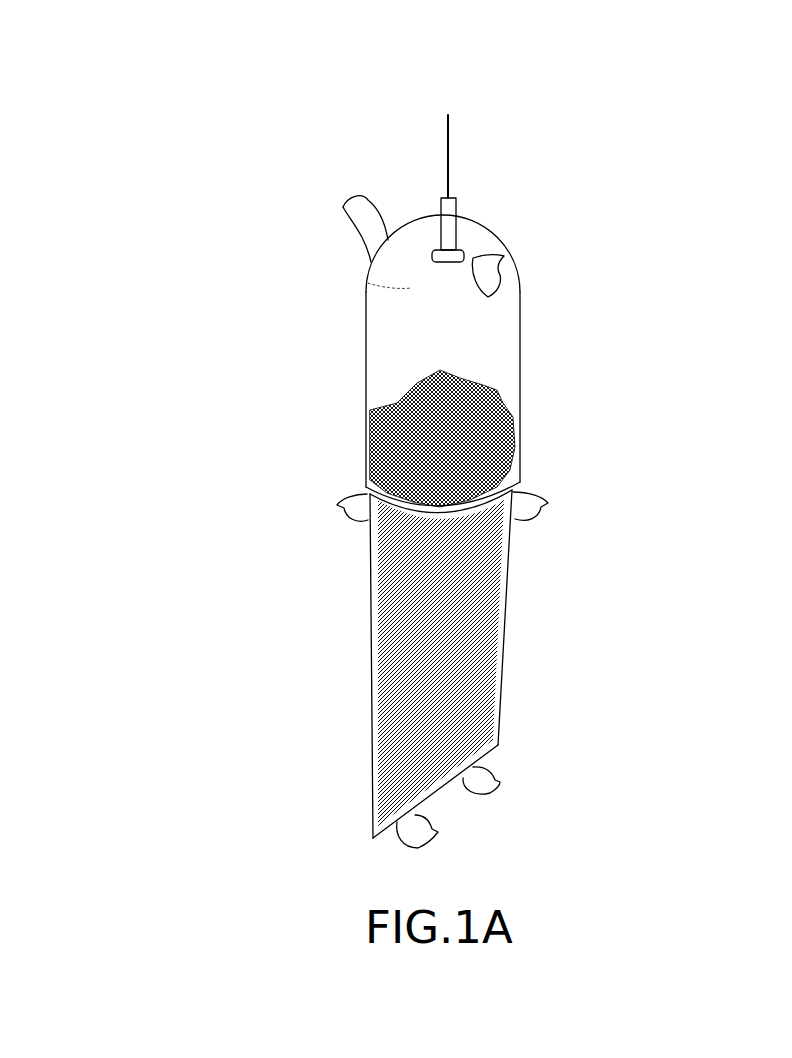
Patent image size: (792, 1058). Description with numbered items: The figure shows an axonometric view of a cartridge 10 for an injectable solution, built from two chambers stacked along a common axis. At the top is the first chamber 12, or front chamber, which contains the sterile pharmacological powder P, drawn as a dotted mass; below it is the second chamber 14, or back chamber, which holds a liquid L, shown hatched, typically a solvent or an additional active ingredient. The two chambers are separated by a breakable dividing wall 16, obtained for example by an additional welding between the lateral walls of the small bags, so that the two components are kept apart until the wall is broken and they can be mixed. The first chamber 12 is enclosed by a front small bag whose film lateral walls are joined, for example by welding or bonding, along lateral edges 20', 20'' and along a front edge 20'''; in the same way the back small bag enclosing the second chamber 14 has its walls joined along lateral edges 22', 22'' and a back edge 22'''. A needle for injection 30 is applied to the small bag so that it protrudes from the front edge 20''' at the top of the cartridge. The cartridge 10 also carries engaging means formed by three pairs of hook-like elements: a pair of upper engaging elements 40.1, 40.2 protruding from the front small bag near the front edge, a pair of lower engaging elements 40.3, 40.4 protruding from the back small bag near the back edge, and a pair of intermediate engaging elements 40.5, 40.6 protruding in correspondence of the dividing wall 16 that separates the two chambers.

The cartridge 10 is at (187, 353).
The first chamber 12 is at (505, 350).
The second chamber 14 is at (487, 562).
The breakable dividing wall 16 is at (427, 503).
The lateral edge 20' is at (340, 385).
The lateral edge 20'' is at (576, 387).
The front edge 20''' is at (485, 228).
The lateral edge 22' is at (305, 666).
The lateral edge 22'' is at (605, 617).
The back edge 22''' is at (476, 810).
The needle for injection 30 is at (452, 145).
The upper engaging element 40.1 is at (350, 205).
The upper engaging element 40.2 is at (497, 275).
The lower engaging element 40.3 is at (400, 833).
The lower engaging element 40.4 is at (487, 793).
The intermediate engaging element 40.5 is at (340, 515).
The intermediate engaging element 40.6 is at (532, 510).
The sterile pharmacological powder P is at (488, 462).
The liquid L is at (500, 690).